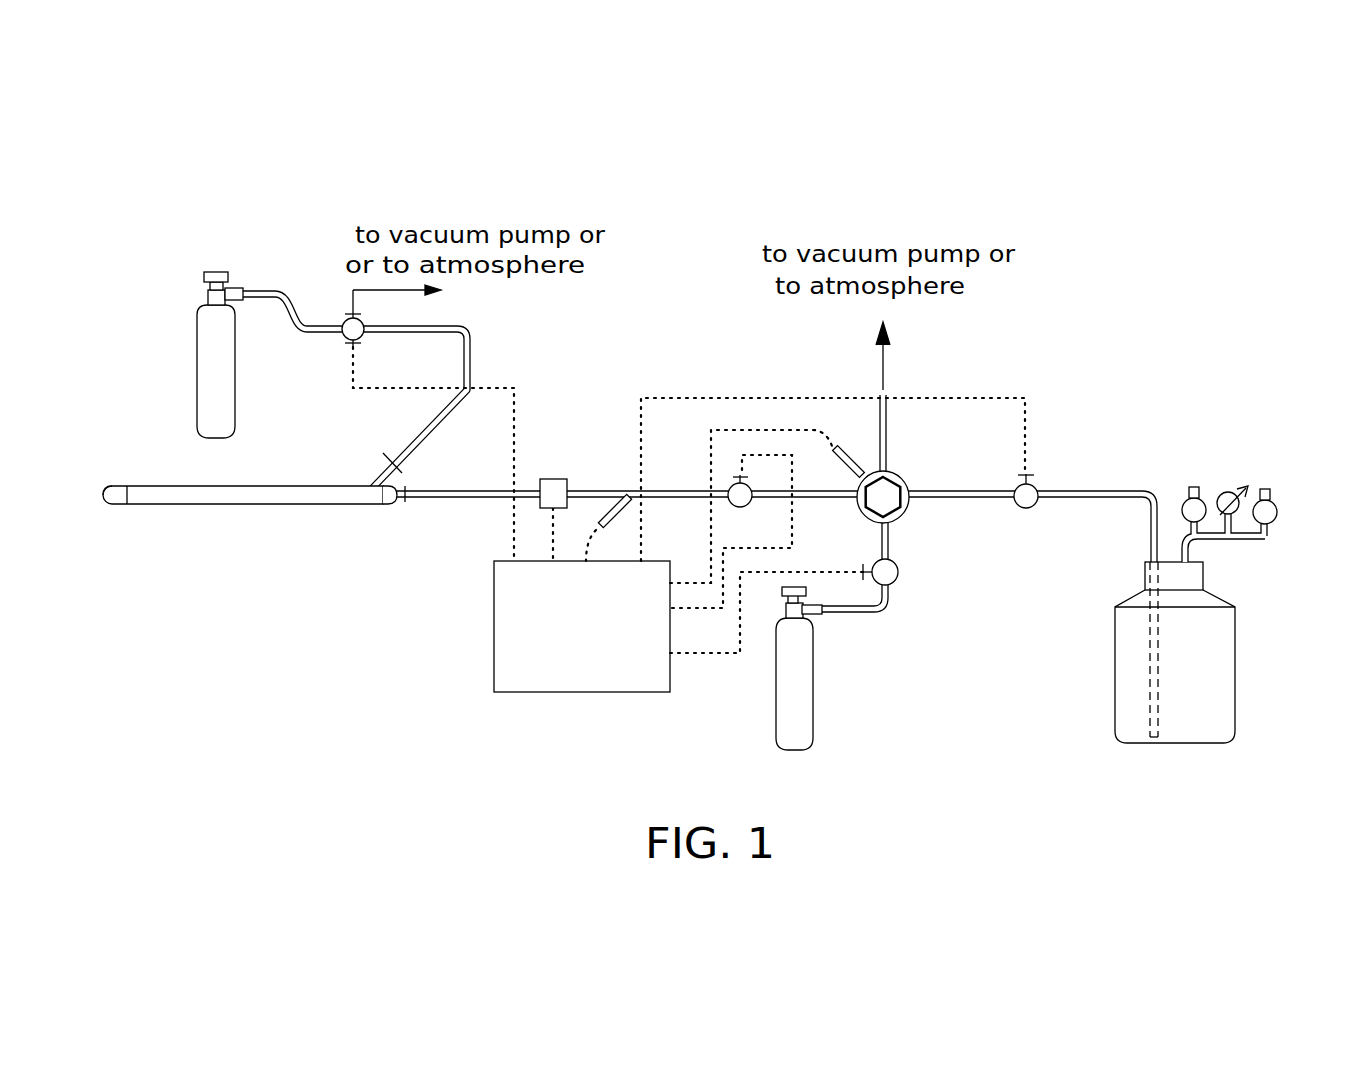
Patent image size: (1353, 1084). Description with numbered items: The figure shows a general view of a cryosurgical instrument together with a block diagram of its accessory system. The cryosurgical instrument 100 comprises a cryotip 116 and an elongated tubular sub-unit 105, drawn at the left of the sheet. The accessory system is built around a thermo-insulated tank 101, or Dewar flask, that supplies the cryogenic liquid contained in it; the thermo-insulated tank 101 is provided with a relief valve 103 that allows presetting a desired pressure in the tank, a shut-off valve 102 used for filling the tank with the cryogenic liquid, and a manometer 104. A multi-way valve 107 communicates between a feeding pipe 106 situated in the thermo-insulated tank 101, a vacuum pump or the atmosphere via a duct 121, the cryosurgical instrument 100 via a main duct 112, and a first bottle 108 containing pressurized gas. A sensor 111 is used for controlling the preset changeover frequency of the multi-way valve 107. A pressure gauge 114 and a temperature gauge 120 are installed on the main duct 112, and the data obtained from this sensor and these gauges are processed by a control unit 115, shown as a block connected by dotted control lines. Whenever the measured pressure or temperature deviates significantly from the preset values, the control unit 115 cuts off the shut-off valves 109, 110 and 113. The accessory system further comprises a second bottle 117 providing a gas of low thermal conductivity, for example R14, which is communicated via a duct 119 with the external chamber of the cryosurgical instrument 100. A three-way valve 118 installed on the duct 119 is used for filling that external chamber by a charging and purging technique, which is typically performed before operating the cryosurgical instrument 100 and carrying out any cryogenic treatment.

The cryosurgical instrument 100 is at (205, 516).
The thermo-insulated tank 101 is at (1235, 700).
The shut-off valve 102 is at (1269, 516).
The relief valve 103 is at (1187, 500).
The manometer 104 is at (1218, 505).
The elongated tubular sub-unit 105 is at (340, 505).
The feeding pipe 106 is at (1150, 705).
The multi-way valve 107 is at (909, 492).
The first bottle 108 is at (776, 685).
The shut-off valve 109 is at (1038, 505).
The shut-off valve 110 is at (899, 578).
The sensor 111 is at (857, 464).
The main duct 112 is at (597, 491).
The shut-off valve 113 is at (735, 485).
The pressure gauge 114 is at (541, 478).
The control unit 115 is at (494, 672).
The cryotip 116 is at (105, 491).
The second bottle 117 is at (197, 367).
The three-way valve 118 is at (338, 334).
The duct 119 is at (470, 367).
The temperature gauge 120 is at (620, 513).
The duct 121 is at (888, 416).